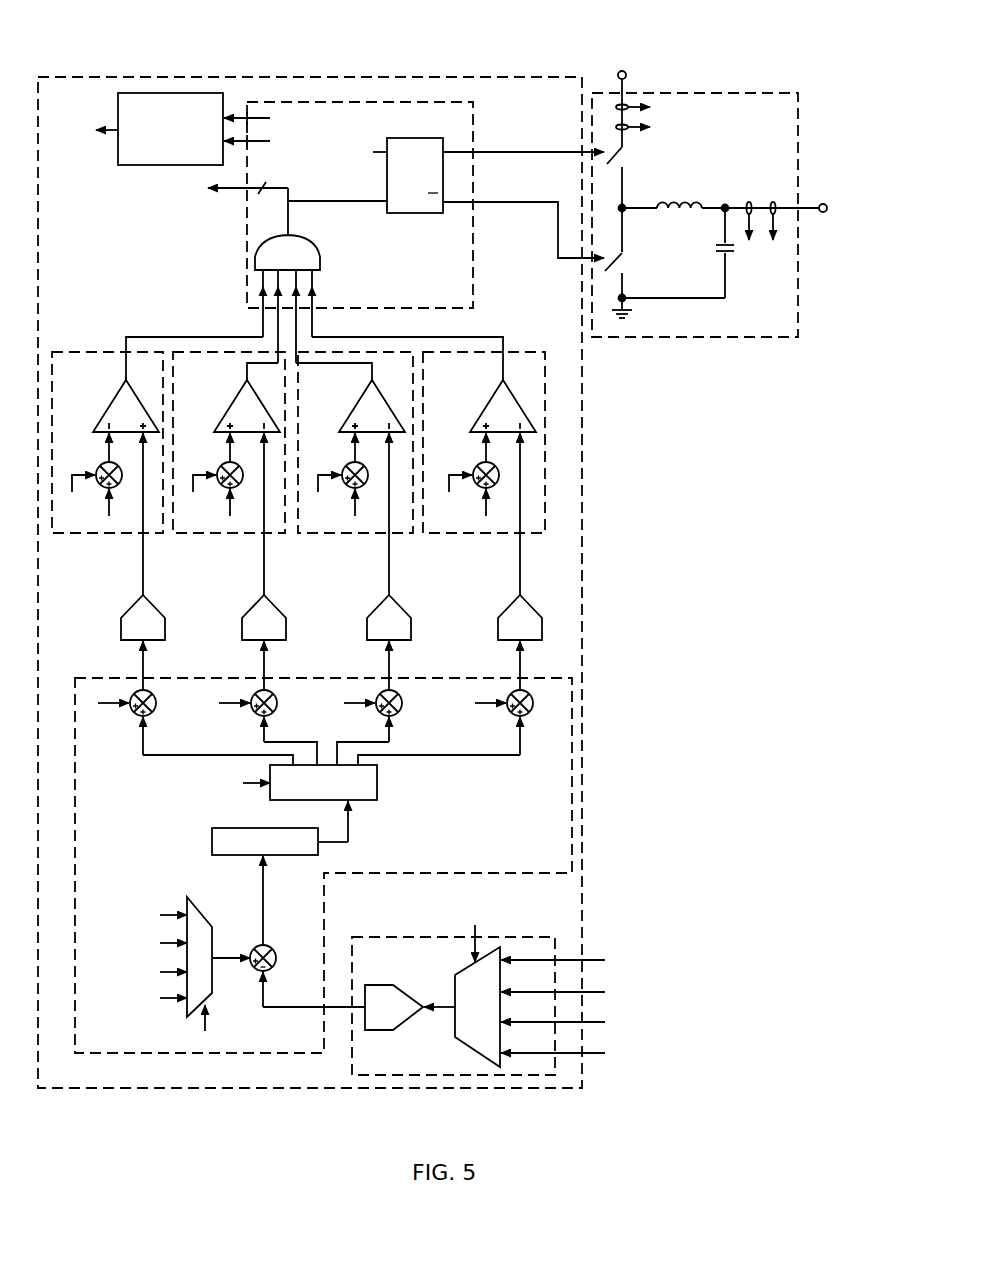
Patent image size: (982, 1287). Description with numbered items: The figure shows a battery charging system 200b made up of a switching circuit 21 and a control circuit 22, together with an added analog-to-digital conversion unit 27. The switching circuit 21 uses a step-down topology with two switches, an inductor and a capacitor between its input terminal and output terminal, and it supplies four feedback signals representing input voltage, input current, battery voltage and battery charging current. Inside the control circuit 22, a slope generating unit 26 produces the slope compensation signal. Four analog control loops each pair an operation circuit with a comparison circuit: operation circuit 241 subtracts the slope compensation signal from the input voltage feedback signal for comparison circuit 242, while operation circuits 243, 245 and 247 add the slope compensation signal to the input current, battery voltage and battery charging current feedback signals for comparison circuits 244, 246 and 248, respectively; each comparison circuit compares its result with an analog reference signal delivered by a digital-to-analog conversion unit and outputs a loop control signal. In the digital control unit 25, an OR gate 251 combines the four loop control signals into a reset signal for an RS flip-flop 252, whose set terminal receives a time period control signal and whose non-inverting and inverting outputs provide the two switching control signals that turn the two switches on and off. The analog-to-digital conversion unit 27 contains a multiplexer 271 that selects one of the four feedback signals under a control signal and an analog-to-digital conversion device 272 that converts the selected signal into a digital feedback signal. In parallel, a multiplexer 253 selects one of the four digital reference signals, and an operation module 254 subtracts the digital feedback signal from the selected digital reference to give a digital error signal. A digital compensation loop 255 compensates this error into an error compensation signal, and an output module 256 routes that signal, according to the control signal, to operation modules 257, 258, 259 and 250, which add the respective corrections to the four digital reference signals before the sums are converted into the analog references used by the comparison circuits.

The battery charging system 200b is at (752, 34).
The control circuit 22 is at (523, 75).
The switching circuit 21 is at (704, 93).
The slope generating unit 26 is at (118, 107).
The digital control unit 25 is at (478, 294).
The RS flip-flop 252 is at (400, 138).
The OR gate 251 is at (325, 256).
The comparison circuit 242 is at (101, 416).
The operation circuit 241 is at (95, 465).
The comparison circuit 244 is at (222, 416).
The operation circuit 243 is at (215, 465).
The comparison circuit 246 is at (347, 416).
The operation circuit 245 is at (340, 465).
The comparison circuit 248 is at (478, 416).
The operation circuit 247 is at (471, 465).
The operation module 257 is at (156, 713).
The operation module 258 is at (277, 713).
The operation module 259 is at (402, 713).
The operation module 250 is at (533, 713).
The output module 256 is at (331, 792).
The digital compensation loop 255 is at (212, 850).
The multiplexer 253 is at (211, 924).
The operation module 254 is at (277, 961).
The analog-to-digital conversion unit 27 is at (497, 933).
The analog-to-digital conversion device 272 is at (382, 985).
The multiplexer 271 is at (454, 986).